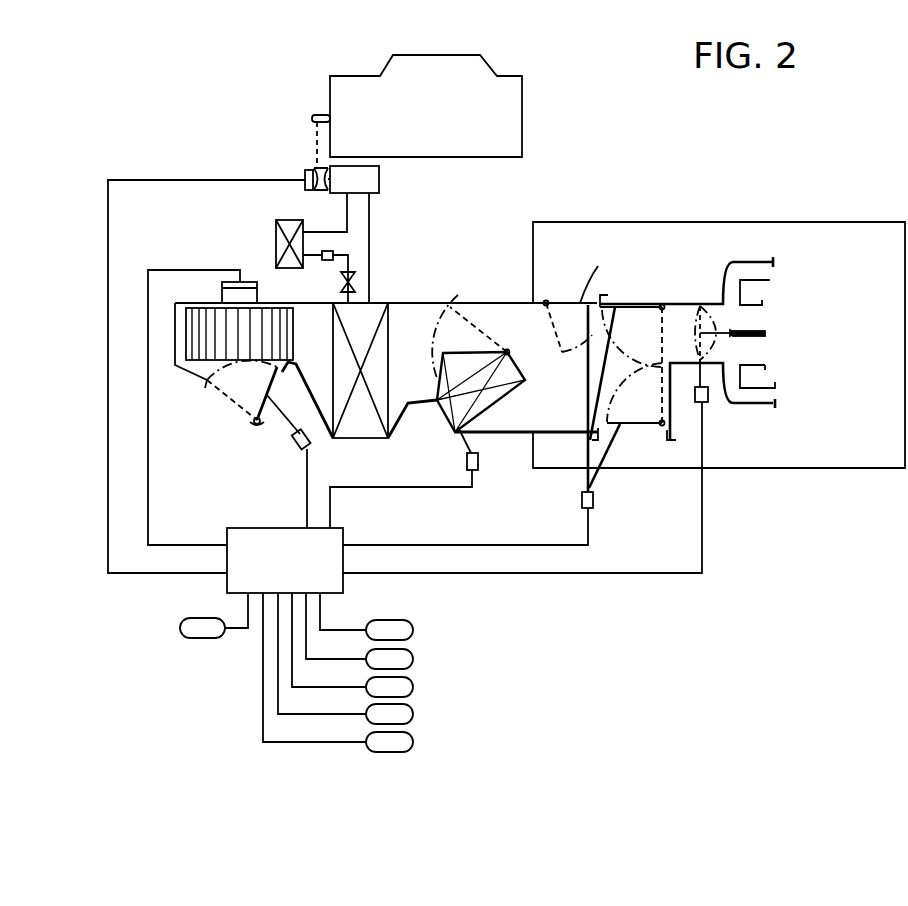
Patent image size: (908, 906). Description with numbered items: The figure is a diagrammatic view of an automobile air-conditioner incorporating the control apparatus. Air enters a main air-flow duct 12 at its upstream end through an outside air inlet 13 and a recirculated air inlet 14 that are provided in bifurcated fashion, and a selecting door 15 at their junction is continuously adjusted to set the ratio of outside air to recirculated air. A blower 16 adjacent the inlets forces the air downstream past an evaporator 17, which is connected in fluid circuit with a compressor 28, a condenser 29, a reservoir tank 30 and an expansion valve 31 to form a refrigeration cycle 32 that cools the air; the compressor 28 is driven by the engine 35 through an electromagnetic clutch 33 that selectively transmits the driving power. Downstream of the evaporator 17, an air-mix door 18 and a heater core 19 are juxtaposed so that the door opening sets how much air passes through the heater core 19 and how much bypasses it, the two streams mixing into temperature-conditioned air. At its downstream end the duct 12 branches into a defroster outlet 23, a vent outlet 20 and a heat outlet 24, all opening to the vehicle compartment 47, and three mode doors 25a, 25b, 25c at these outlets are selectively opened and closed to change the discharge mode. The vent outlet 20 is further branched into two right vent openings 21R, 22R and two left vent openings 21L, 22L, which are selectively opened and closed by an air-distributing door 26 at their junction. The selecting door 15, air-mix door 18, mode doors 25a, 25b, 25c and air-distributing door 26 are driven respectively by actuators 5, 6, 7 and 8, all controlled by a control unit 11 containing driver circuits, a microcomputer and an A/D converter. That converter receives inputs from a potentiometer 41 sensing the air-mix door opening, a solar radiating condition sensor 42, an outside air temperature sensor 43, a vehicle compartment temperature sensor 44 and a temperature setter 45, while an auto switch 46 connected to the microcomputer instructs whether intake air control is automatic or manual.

The actuator 5 is at (310, 446).
The actuator 6 is at (480, 462).
The actuator 7 is at (594, 498).
The actuator 8 is at (708, 396).
The control unit 11 is at (247, 527).
The main air-flow duct 12 is at (417, 302).
The outside air inlet 13 is at (213, 386).
The recirculated air inlet 14 is at (282, 378).
The selecting door 15 is at (266, 426).
The blower 16 is at (205, 317).
The evaporator 17 is at (363, 436).
The air-mix door 18 is at (477, 350).
The heater core 19 is at (500, 398).
The vent outlet 20 is at (675, 301).
The right vent opening 21R is at (765, 314).
The left vent opening 21L is at (763, 352).
The right vent opening 22R is at (774, 266).
The left vent opening 22L is at (776, 406).
The defroster outlet 23 is at (544, 302).
The heat outlet 24 is at (665, 439).
The mode door 25a is at (601, 273).
The mode door 25b is at (628, 311).
The mode door 25c is at (635, 424).
The air-distributing door 26 is at (710, 333).
The compressor 28 is at (380, 183).
The condenser 29 is at (275, 232).
The reservoir tank 30 is at (322, 260).
The expansion valve 31 is at (342, 281).
The refrigeration cycle 32 is at (382, 239).
The electromagnetic clutch 33 is at (313, 168).
The engine 35 is at (448, 121).
The potentiometer 41 is at (413, 630).
The solar radiating condition sensor 42 is at (413, 659).
The outside air temperature sensor 43 is at (413, 687).
The vehicle compartment temperature sensor 44 is at (413, 714).
The temperature setter 45 is at (413, 742).
The auto switch 46 is at (180, 628).
The vehicle compartment 47 is at (743, 217).